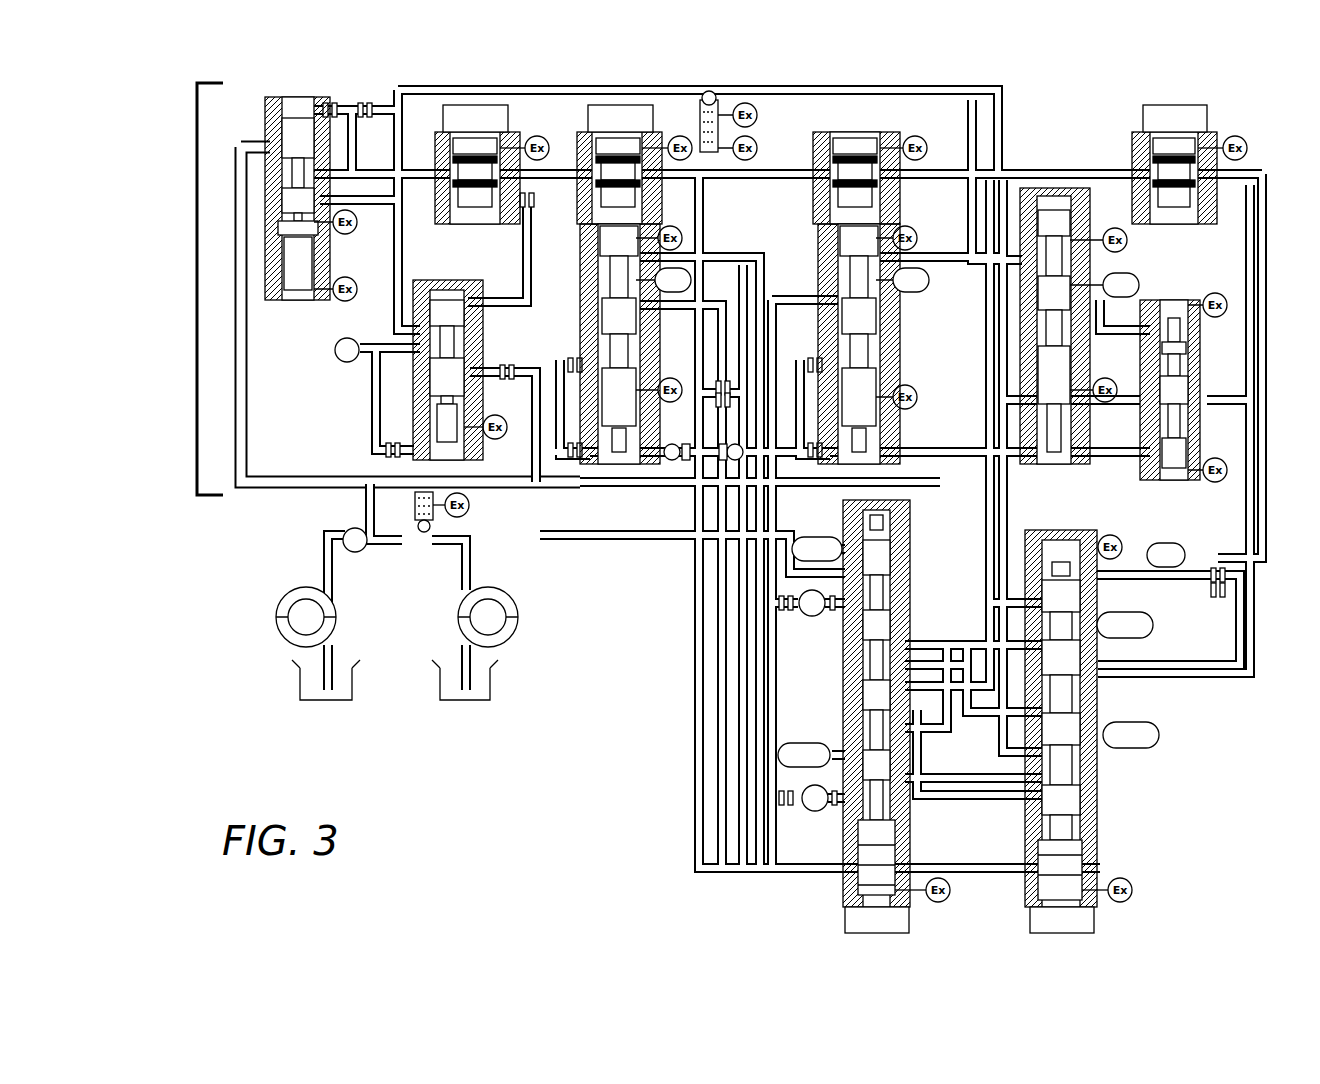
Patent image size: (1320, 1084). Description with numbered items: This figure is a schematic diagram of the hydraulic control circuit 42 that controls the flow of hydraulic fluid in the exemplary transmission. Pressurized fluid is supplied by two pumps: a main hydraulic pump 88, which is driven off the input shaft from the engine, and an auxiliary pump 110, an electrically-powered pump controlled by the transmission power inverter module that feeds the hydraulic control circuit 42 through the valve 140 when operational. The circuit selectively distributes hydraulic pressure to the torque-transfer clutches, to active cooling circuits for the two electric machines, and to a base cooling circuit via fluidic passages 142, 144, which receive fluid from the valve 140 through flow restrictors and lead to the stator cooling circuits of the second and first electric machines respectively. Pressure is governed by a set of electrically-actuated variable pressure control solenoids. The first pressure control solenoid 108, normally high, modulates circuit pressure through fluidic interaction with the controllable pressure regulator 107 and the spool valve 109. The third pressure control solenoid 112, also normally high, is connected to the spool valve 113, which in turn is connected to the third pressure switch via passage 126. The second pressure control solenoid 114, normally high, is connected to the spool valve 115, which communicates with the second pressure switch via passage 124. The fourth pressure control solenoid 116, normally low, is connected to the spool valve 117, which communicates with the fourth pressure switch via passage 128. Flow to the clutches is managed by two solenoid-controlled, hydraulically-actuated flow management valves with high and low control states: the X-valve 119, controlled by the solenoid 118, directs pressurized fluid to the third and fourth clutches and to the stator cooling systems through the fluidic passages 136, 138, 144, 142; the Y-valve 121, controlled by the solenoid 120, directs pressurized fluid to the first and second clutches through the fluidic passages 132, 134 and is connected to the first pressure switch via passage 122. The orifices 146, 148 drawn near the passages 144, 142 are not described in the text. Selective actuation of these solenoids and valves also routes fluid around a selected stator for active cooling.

The hydraulic control circuit 42 is at (197, 165).
The main hydraulic pump 88 is at (495, 640).
The controllable pressure regulator 107 is at (292, 282).
The pressure control solenoid PCS1 108 is at (458, 103).
The spool valve 109 is at (465, 310).
The auxiliary pump 110 is at (300, 640).
The pressure control solenoid PCS3 112 is at (1150, 108).
The spool valve 113 is at (1060, 320).
The pressure control solenoid PCS2 114 is at (832, 103).
The spool valve 115 is at (848, 222).
The pressure control solenoid PCS4 116 is at (598, 103).
The spool valve 117 is at (614, 258).
The solenoid 118 is at (858, 922).
The X-valve 119 is at (865, 677).
The solenoid 120 is at (1042, 922).
The Y-valve 121 is at (1065, 788).
The passage 122 is at (1172, 545).
The passage 124 is at (922, 270).
The passage 126 is at (1130, 270).
The passage 128 is at (680, 266).
The fluidic passage 132 is at (1159, 735).
The fluidic passage 134 is at (1153, 628).
The fluidic passage 136 is at (800, 743).
The fluidic passage 138 is at (816, 537).
The valve 140 is at (352, 532).
The fluidic passage 142 is at (815, 812).
The fluidic passage 144 is at (810, 617).
The orifice 146 is at (790, 608).
The orifice 148 is at (780, 804).